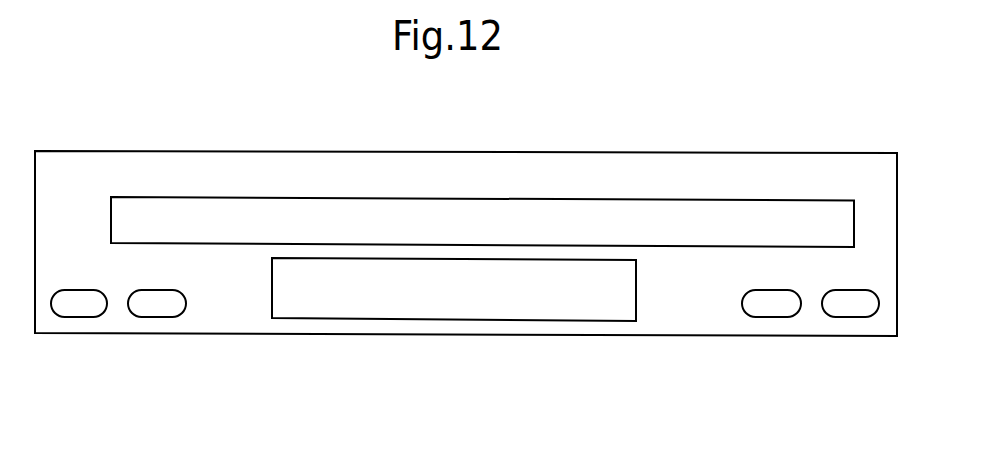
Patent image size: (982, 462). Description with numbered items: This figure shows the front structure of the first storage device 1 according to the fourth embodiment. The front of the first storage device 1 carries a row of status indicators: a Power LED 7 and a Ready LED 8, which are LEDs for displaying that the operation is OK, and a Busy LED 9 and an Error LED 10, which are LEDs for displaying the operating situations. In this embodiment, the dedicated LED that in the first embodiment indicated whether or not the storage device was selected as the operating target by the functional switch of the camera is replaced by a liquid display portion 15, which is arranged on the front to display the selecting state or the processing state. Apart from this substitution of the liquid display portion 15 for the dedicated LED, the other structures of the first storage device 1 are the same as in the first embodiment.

The first storage device 1 is at (562, 153).
The liquid display portion 15 is at (468, 320).
The Power LED 7 is at (78, 318).
The Ready LED 8 is at (161, 318).
The Busy LED 9 is at (768, 320).
The Error LED 10 is at (862, 320).